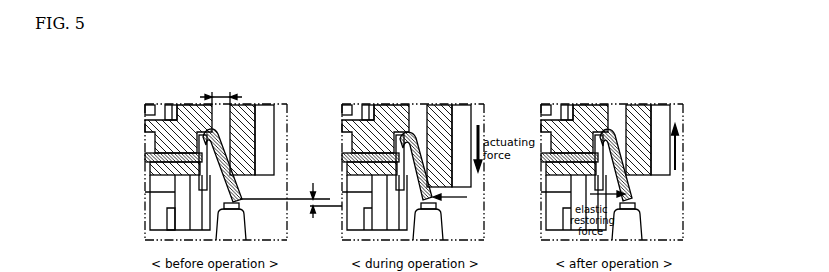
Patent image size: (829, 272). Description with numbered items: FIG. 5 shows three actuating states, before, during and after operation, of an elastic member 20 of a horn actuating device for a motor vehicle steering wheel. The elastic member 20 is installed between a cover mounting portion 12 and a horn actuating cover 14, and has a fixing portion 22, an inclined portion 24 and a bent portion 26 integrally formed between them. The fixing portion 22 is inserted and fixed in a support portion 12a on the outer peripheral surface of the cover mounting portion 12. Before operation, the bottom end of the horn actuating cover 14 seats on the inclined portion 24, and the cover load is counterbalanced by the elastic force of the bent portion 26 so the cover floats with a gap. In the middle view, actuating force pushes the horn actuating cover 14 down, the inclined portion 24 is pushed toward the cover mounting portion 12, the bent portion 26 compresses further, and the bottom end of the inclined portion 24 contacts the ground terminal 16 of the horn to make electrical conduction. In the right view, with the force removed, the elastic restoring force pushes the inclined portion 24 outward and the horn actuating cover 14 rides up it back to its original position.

The cover mounting portion 12 is at (193, 105).
The support portion 12a is at (165, 152).
The horn actuating cover 14 is at (254, 122).
The ground terminal 16 is at (240, 208).
The elastic member 20 is at (113, 180).
The fixing portion 22 is at (146, 172).
The inclined portion 24 is at (215, 188).
The bent portion 26 is at (182, 166).